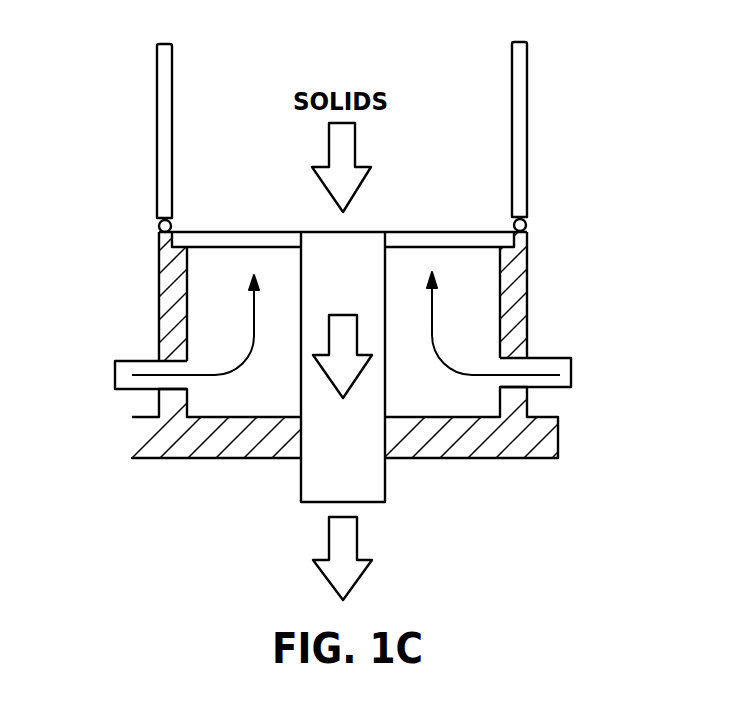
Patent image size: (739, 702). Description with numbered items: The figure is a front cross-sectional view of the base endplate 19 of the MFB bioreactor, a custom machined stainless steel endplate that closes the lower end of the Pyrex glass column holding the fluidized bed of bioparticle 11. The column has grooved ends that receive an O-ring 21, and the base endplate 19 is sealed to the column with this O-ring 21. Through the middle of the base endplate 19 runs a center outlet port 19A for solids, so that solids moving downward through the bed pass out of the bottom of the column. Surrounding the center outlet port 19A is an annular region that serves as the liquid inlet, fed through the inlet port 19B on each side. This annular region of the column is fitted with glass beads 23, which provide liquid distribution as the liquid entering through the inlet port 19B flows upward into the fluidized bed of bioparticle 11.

The bioparticle 11 is at (162, 122).
The O-ring 21 is at (160, 227).
The glass beads 23 is at (527, 247).
The base endplate 19 is at (517, 440).
The center outlet port 19A is at (372, 482).
The inlet port 19B is at (128, 362).